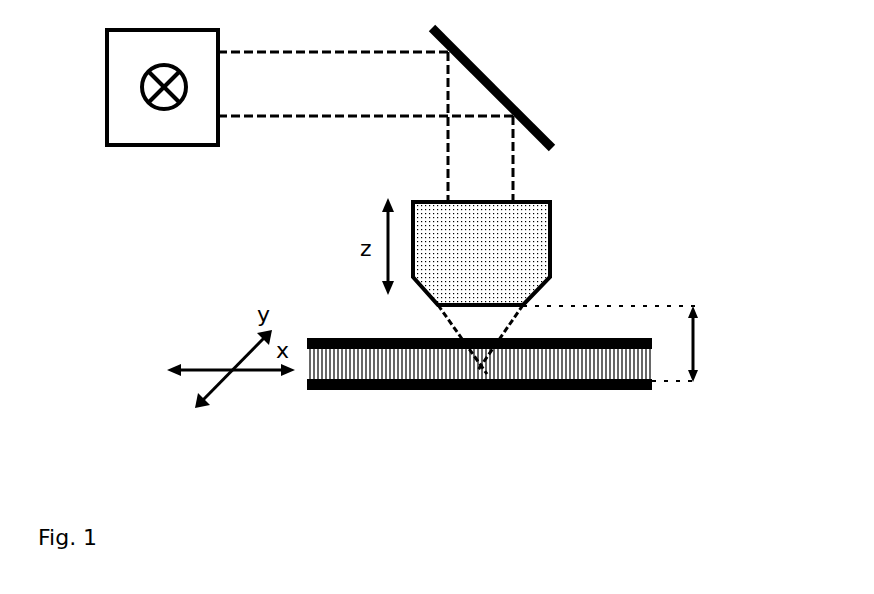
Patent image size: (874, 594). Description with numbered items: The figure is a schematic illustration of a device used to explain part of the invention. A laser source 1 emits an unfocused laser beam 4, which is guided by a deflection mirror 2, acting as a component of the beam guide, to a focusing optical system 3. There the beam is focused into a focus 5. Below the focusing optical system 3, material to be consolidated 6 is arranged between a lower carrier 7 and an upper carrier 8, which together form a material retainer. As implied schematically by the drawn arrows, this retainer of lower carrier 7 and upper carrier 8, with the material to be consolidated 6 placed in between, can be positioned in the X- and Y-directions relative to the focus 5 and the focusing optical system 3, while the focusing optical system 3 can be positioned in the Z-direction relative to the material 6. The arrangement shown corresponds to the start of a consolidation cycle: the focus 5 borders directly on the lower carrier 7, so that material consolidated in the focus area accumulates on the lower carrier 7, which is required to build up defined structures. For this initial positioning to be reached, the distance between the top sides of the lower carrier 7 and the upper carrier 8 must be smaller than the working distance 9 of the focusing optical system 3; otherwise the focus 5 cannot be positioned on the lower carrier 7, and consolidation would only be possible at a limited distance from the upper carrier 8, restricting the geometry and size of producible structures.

The laser source 1 is at (167, 128).
The deflection mirror 2 is at (515, 103).
The focusing optical system 3 is at (518, 260).
The unfocused laser beam 4 is at (315, 90).
The focus 5 is at (475, 390).
The material to be consolidated 6 is at (522, 362).
The lower carrier 7 is at (597, 390).
The upper carrier 8 is at (602, 338).
The working distance 9 is at (620, 344).